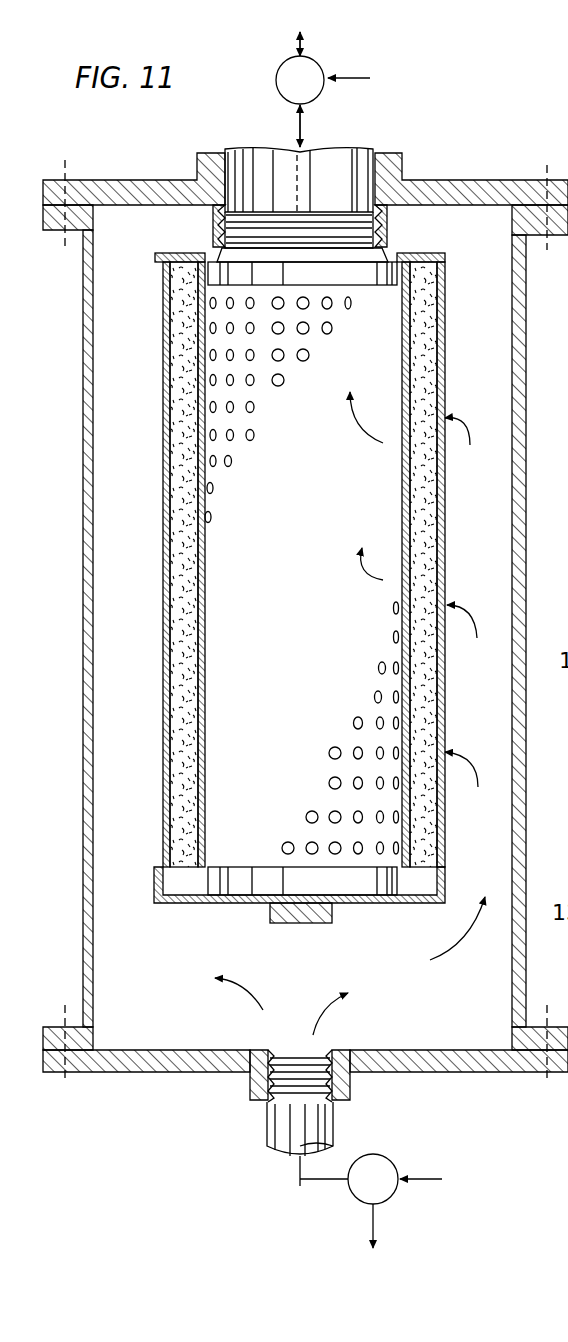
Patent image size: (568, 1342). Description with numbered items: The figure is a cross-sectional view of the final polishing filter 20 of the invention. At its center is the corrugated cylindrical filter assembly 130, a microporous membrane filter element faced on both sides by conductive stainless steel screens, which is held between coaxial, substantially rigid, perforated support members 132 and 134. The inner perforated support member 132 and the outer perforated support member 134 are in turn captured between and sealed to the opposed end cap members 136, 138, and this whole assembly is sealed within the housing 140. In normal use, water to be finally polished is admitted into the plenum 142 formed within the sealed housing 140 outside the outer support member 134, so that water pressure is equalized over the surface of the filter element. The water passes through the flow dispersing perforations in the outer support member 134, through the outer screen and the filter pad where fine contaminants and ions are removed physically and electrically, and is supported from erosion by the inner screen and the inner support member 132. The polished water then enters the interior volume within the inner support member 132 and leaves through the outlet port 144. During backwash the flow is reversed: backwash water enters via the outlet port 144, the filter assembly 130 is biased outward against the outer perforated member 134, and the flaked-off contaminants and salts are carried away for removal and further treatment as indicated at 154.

The filter assembly housing 20 is at (143, 1118).
The filter assembly 130 is at (418, 513).
The inner perforated support member 132 is at (400, 512).
The outer perforated support member 134 is at (441, 680).
The end cap member 136 is at (392, 905).
The end cap member 138 is at (420, 256).
The housing 140 is at (390, 1073).
The plenum 142 is at (327, 989).
The outlet port 144 is at (335, 170).
The removal and further treatment 154 is at (378, 1220).